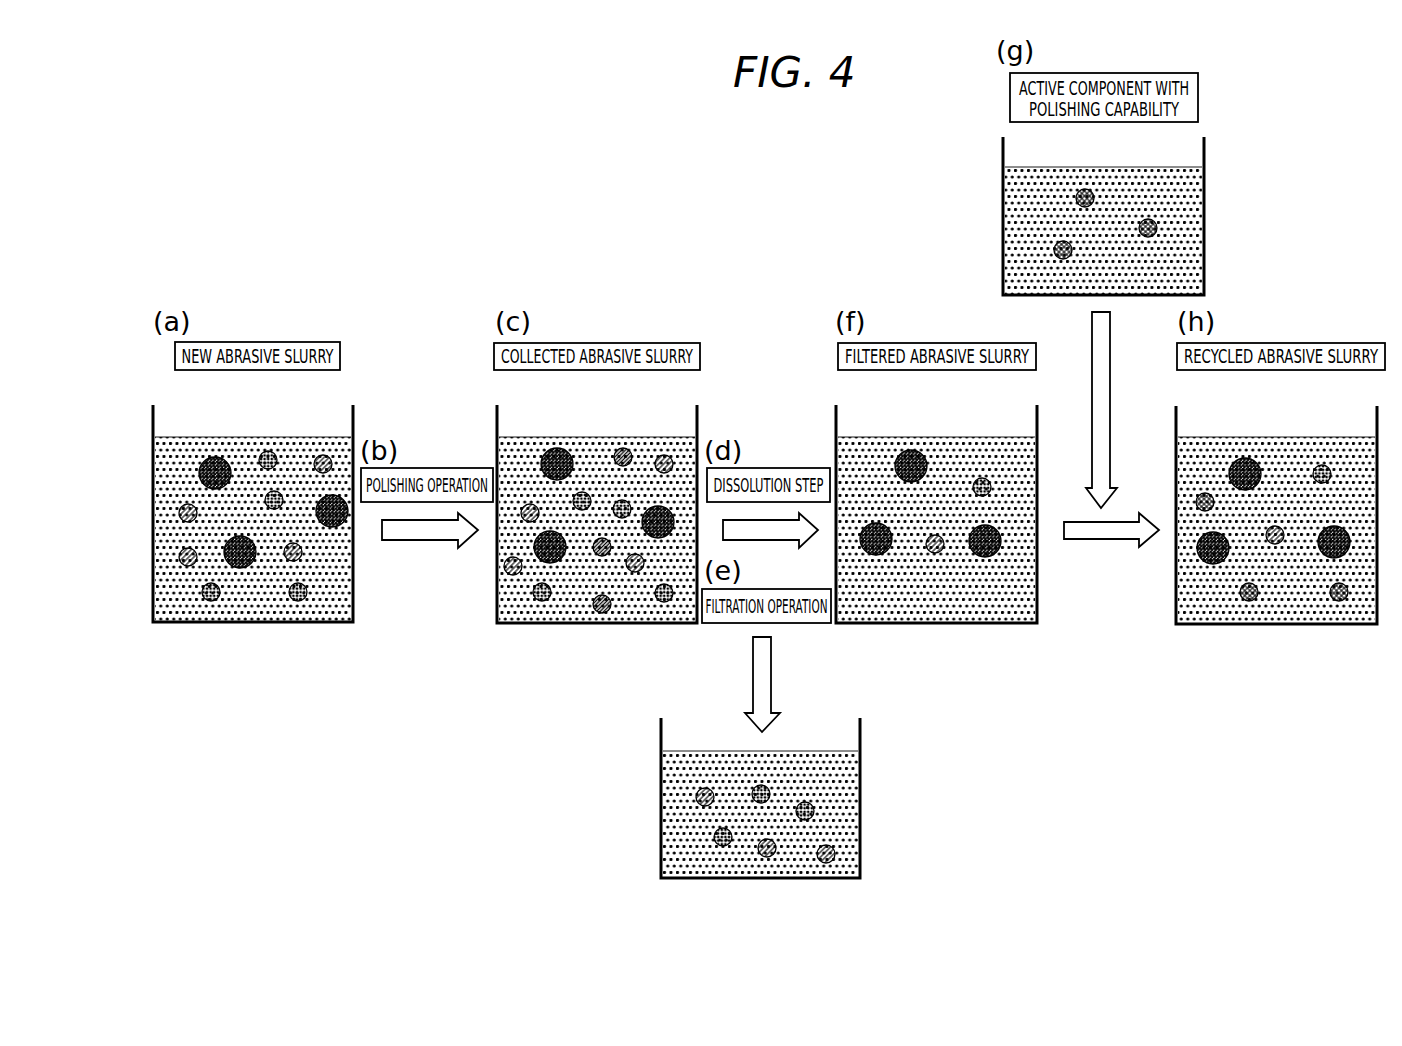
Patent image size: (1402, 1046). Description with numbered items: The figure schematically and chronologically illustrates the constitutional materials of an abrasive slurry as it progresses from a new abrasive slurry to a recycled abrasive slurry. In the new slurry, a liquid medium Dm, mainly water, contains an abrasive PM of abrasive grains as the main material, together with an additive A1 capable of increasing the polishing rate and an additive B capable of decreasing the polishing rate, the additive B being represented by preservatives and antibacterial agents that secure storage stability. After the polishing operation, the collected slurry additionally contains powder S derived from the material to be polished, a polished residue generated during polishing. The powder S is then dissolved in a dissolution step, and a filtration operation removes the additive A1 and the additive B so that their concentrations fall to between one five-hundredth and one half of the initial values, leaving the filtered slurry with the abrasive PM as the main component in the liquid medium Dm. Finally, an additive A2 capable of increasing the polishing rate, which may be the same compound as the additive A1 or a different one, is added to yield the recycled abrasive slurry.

The abrasive PM is at (205, 461).
The liquid medium Dm is at (343, 457).
The additive capable of decreasing a polishing rate B is at (316, 457).
The additive capable of increasing a polishing rate A1 is at (298, 602).
The powder derived from the material to be polished S is at (605, 613).
The additive capable of increasing a polishing rate A2 is at (1157, 226).